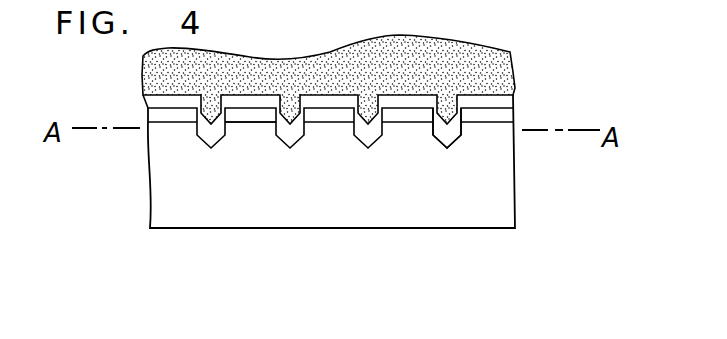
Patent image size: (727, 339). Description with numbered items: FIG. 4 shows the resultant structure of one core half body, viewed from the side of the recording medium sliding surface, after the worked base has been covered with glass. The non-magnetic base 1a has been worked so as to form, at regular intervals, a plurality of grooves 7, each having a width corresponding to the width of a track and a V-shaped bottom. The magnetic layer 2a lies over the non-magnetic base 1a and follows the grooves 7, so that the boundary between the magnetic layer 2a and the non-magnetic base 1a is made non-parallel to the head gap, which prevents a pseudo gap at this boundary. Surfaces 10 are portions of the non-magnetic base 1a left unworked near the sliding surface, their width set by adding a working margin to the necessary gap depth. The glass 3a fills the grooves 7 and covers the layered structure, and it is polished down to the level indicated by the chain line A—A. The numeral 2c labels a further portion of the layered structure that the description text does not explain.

The glass portion 3a is at (495, 60).
The magnetic layer 2a is at (514, 104).
The layer boundary 2c is at (175, 110).
The surface 10 is at (248, 124).
The groove 7 is at (449, 141).
The non-magnetic base 1a is at (393, 210).